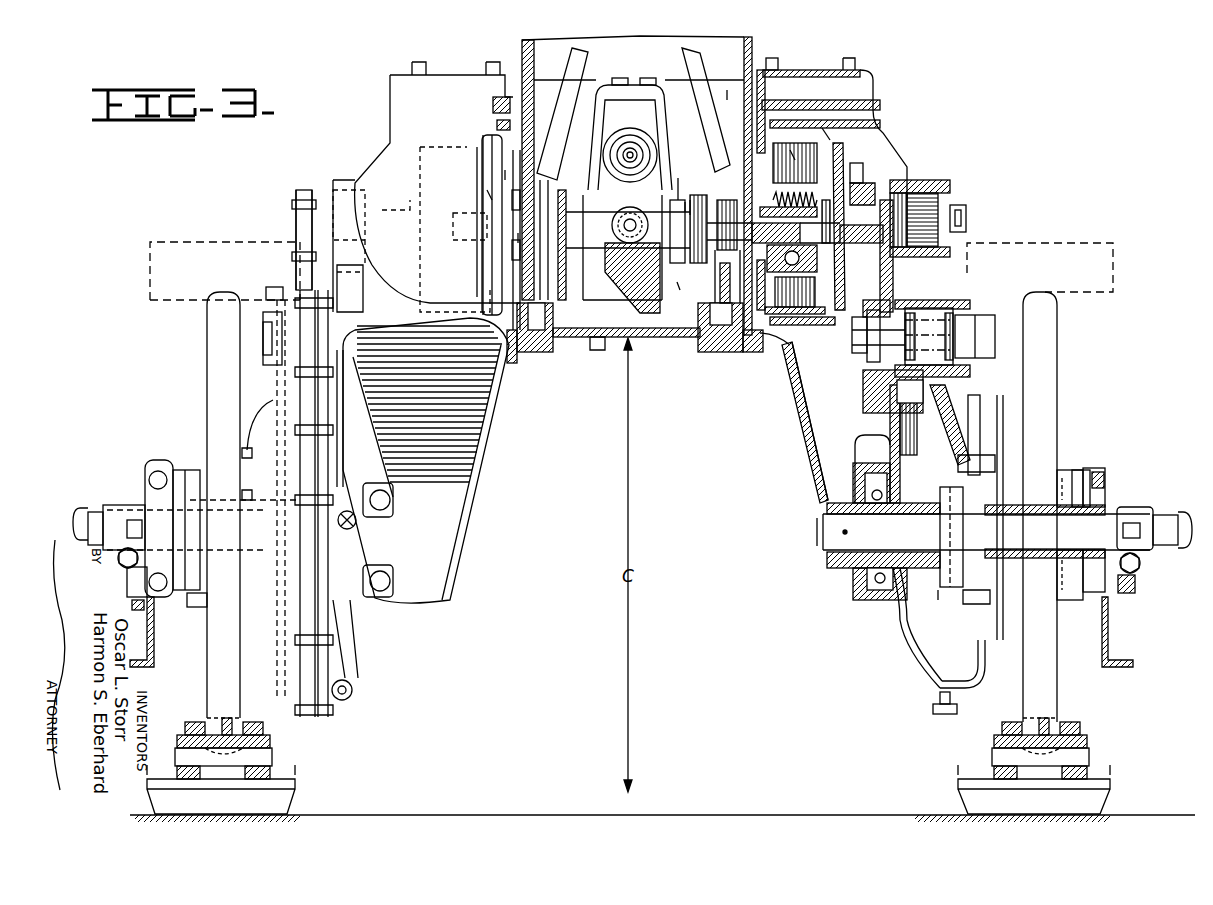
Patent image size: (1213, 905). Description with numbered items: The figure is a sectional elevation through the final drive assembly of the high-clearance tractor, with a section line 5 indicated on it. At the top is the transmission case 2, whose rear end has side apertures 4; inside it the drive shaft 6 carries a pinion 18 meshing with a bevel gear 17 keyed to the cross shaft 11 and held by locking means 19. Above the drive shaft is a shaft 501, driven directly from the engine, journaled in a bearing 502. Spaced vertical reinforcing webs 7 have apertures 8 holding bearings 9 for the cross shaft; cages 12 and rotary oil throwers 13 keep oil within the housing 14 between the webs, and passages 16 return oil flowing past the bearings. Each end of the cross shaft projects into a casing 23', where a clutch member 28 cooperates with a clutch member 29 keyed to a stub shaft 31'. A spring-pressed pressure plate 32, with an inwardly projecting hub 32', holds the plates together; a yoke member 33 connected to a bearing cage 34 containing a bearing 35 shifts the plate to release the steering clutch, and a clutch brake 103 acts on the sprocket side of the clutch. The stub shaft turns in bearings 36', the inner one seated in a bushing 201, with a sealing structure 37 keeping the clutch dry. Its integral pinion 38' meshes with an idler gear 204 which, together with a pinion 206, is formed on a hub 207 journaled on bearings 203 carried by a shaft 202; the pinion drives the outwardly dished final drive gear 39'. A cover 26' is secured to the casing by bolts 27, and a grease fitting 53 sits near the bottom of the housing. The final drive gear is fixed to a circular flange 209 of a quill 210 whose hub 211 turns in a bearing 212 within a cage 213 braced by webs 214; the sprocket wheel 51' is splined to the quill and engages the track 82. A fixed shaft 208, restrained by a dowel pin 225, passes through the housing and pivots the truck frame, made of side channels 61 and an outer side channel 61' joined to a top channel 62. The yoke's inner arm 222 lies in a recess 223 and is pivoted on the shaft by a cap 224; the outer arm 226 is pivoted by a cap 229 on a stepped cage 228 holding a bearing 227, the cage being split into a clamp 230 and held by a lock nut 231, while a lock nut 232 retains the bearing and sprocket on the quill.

The transmission case 2 is at (748, 62).
The side apertures 4 is at (965, 105).
The section line 5 is at (628, 30).
The drive shaft 6 is at (623, 243).
The vertical reinforcing webs 7 is at (578, 340).
The apertures 8 is at (590, 180).
The bearings 9 is at (659, 231).
The cross shaft 11 is at (566, 207).
The cages 12 is at (563, 253).
The rotary oil throwers 13 is at (693, 268).
The housing 14 is at (626, 272).
The passages 16 is at (677, 282).
The bevel gear 17 is at (660, 180).
The pinion 18 is at (645, 257).
The locking means 19 is at (626, 147).
The casing 23' is at (582, 460).
The cover 26' is at (632, 482).
The bolts 27 is at (300, 378).
The clutch member 28 is at (792, 223).
The clutch member 29 is at (487, 190).
The stub shaft 31' is at (608, 215).
The pressure plate 32 is at (604, 184).
The hub 32' is at (576, 233).
The yoke member 33 is at (575, 88).
The bearing cage 34 is at (520, 212).
The bearing 35 is at (768, 345).
The bearings 36' is at (936, 198).
The sealing structure 37 is at (855, 178).
The pinion 38' is at (665, 228).
The final drive gear 39' is at (634, 503).
The sprocket wheel 51' is at (634, 507).
The grease fitting 53 is at (348, 523).
The side channels 61 is at (975, 668).
The outer side channel 61' is at (654, 645).
The top channel 62 is at (193, 600).
The track 82 is at (270, 758).
The clutch brake 103 is at (500, 150).
The bushing 201 is at (895, 215).
The shaft 202 is at (267, 333).
The bearings 203 is at (960, 318).
The idler gear 204 is at (370, 272).
The pinion 206 is at (303, 290).
The hub 207 is at (925, 300).
The fixed shaft 208 is at (440, 523).
The circular flange 209 is at (978, 468).
The quill 210 is at (222, 505).
The hub 211 is at (940, 550).
The bearing 212 is at (947, 498).
The cage 213 is at (938, 590).
The webs 214 is at (890, 445).
The inner arm 222 is at (875, 573).
The recess 223 is at (392, 482).
The cap 224 is at (408, 560).
The dowel pin 225 is at (845, 532).
The outer arm 226 is at (1117, 473).
The bearing 227 is at (1100, 470).
The stepped cage 228 is at (120, 508).
The cap 229 is at (152, 462).
The clamp 230 is at (132, 570).
The lock nut 231 is at (73, 517).
The lock nut 232 is at (1085, 602).
The shaft 501 is at (505, 175).
The bearing 502 is at (632, 150).